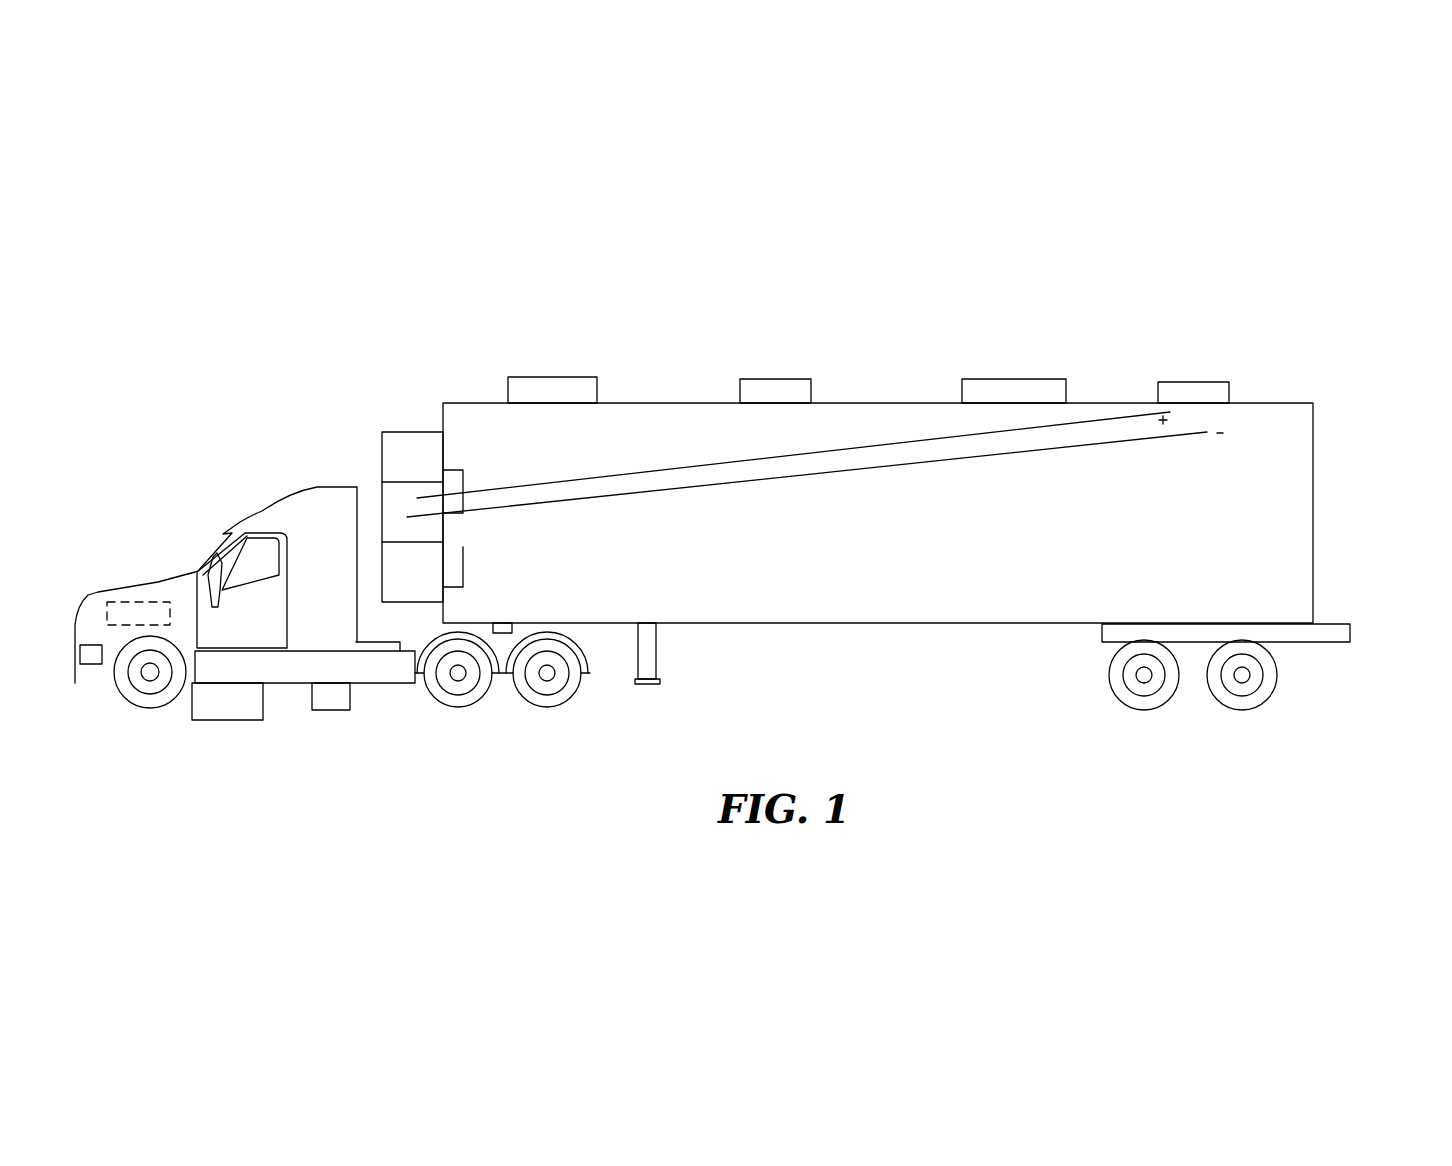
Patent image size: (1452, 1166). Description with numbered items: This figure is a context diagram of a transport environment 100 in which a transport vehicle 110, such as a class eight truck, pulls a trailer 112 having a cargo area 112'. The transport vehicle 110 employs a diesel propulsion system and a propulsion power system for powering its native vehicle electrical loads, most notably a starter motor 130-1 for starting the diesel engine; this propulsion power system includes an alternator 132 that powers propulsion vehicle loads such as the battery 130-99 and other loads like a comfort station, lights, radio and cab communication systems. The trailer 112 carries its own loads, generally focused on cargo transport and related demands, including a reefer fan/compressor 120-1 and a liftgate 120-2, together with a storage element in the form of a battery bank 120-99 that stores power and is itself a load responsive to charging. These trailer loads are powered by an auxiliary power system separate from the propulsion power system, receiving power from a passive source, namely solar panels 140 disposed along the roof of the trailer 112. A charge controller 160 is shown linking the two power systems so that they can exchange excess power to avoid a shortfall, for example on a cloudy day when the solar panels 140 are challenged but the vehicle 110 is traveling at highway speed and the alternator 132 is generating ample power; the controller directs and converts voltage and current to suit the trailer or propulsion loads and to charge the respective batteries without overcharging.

The transport environment 100 is at (259, 757).
The transport vehicle 110 is at (263, 510).
The trailer 112 is at (878, 564).
The cargo area 112' is at (1009, 509).
The reefer fan/compressor 120-1 is at (407, 445).
The liftgate 120-2 is at (1350, 635).
The battery bank 120-99 is at (432, 575).
The starter motor 130-1 is at (97, 690).
The battery 130-99 is at (330, 718).
The alternator 132 is at (157, 603).
The solar panels 140 is at (1185, 377).
The charge controller 160 is at (407, 517).